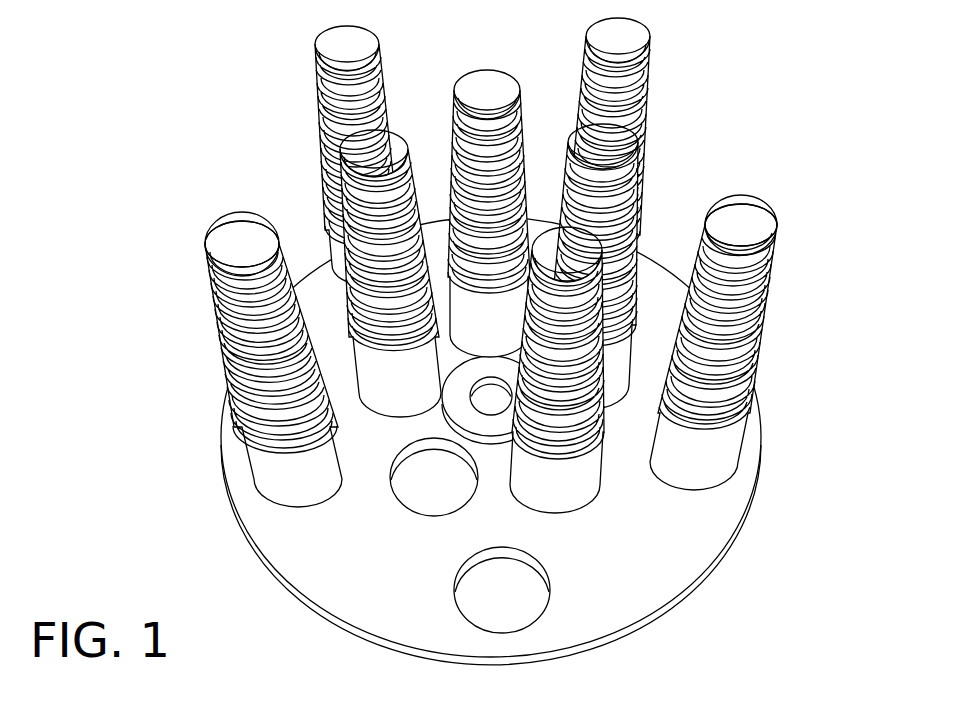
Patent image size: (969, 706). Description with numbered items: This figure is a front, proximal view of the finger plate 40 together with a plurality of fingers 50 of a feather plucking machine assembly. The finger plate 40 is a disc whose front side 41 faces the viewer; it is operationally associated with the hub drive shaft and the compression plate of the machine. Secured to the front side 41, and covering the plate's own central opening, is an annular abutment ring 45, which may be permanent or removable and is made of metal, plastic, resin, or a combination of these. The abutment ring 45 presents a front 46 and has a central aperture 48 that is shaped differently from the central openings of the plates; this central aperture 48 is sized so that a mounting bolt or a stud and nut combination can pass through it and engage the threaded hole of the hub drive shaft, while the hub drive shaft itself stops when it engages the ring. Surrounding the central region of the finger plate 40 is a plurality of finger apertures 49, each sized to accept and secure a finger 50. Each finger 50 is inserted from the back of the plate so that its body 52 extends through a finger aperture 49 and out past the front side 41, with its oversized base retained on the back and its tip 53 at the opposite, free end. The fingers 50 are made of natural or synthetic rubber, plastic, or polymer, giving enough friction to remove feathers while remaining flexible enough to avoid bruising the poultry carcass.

The finger plate 40 is at (333, 553).
The front side 41 is at (678, 548).
The annular abutment ring 45 is at (457, 393).
The front 46 is at (473, 583).
The central aperture 48 is at (497, 413).
The finger apertures 49 is at (427, 495).
The finger 50 is at (505, 265).
The body 52 is at (760, 325).
The tip 53 is at (223, 228).